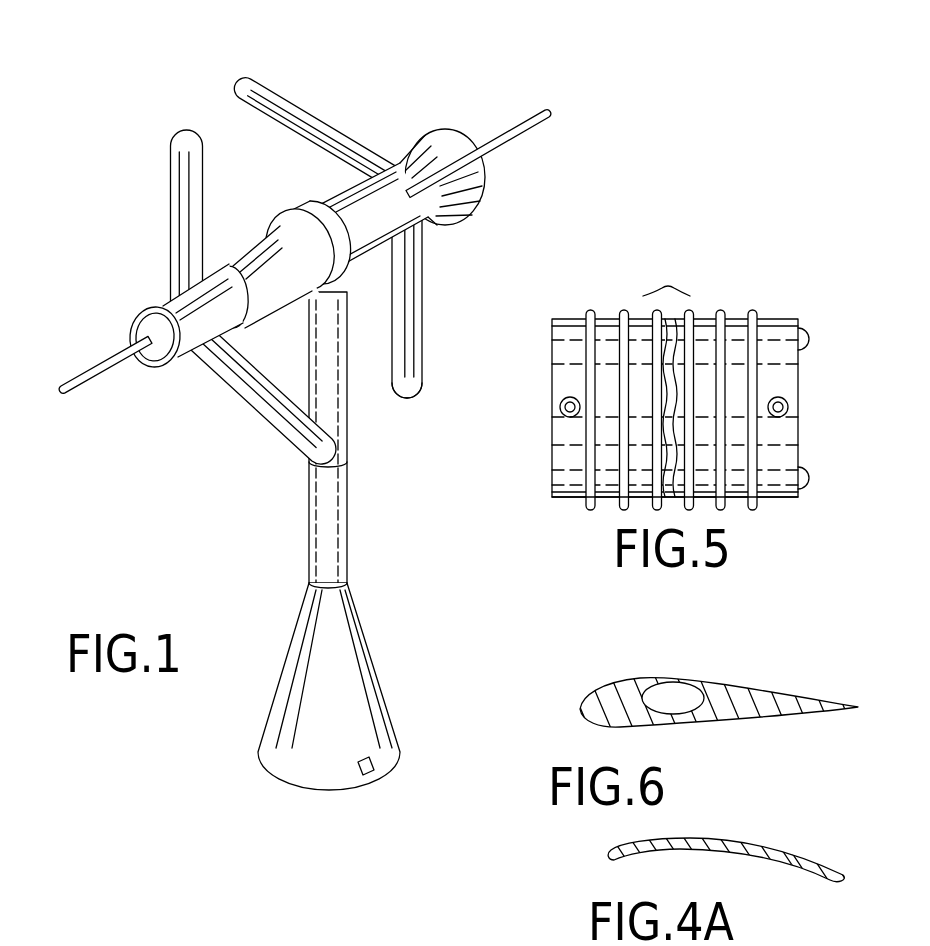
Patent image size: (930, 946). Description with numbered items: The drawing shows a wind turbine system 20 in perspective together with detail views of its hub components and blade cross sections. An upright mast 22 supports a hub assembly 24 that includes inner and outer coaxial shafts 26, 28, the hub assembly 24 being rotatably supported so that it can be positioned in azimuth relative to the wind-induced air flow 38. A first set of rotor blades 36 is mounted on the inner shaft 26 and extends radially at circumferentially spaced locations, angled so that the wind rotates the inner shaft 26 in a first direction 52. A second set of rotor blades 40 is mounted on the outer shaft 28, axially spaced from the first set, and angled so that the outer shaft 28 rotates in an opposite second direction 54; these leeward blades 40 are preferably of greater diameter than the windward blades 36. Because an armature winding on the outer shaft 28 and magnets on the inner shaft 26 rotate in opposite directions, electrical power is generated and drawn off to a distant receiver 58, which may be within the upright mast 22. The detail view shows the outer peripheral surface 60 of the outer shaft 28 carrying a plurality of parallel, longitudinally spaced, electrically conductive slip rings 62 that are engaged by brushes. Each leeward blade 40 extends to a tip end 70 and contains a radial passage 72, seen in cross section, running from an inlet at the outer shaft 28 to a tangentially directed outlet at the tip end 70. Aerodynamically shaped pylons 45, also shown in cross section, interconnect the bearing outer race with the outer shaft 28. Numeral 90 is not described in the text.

In FIG. 1, the wind turbine system 20 is at (523, 70).
In FIG. 1, the upright mast 22 is at (327, 530).
In FIG. 1, the hub assembly 24 is at (255, 226).
In FIG. 1, the inner shaft 26 is at (222, 296).
In FIG. 1, the outer shaft 28 is at (387, 188).
In FIG. 5, the outer shaft 28 is at (797, 502).
In FIG. 1, the first set of rotor blades 36 is at (169, 212).
In FIG. 1, the wind-induced air flow 38 is at (80, 392).
In FIG. 1, the second set of rotor blades 40 is at (323, 132).
In FIG. 6, the second set of rotor blades 40 is at (753, 690).
In FIG. 4A, the pylons 45 is at (789, 848).
In FIG. 1, the first direction 52 is at (142, 387).
In FIG. 1, the second direction 54 is at (478, 130).
In FIG. 1, the distant receiver 58 is at (373, 777).
In FIG. 5, the outer peripheral surface 60 is at (778, 377).
In FIG. 5, the slip rings 62 is at (752, 340).
In FIG. 1, the tip end 70 is at (412, 398).
In FIG. 6, the radial passage 72 is at (673, 682).
In FIG. 1, the ground 90 is at (125, 945).